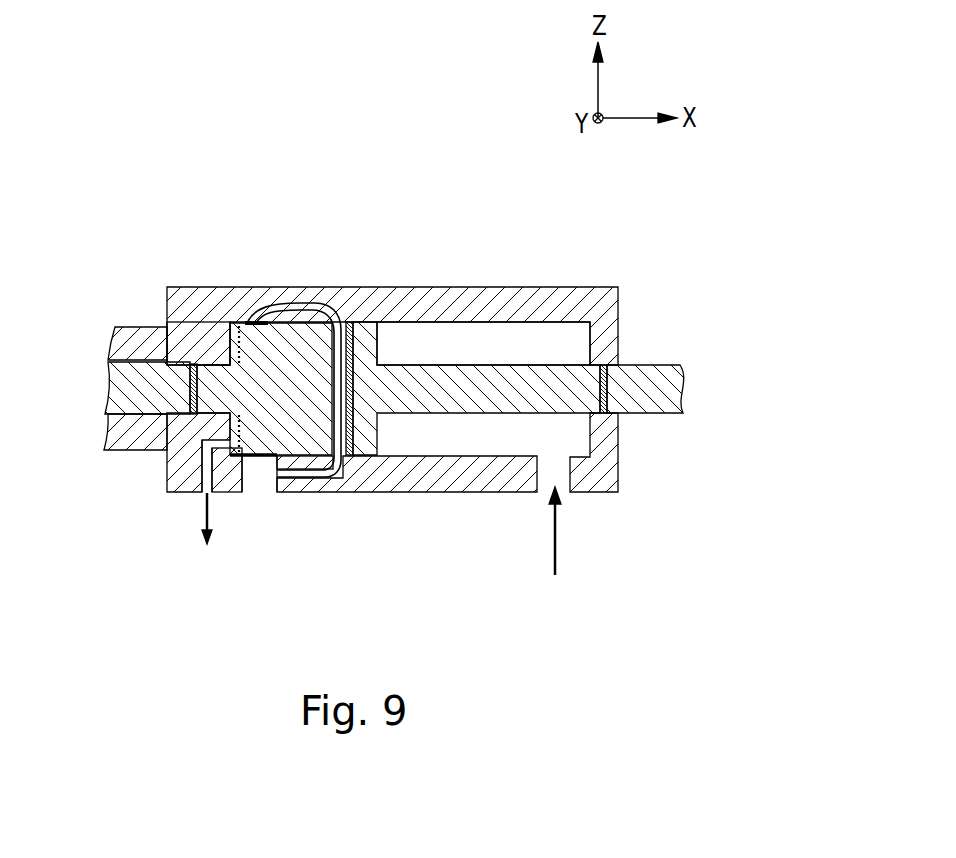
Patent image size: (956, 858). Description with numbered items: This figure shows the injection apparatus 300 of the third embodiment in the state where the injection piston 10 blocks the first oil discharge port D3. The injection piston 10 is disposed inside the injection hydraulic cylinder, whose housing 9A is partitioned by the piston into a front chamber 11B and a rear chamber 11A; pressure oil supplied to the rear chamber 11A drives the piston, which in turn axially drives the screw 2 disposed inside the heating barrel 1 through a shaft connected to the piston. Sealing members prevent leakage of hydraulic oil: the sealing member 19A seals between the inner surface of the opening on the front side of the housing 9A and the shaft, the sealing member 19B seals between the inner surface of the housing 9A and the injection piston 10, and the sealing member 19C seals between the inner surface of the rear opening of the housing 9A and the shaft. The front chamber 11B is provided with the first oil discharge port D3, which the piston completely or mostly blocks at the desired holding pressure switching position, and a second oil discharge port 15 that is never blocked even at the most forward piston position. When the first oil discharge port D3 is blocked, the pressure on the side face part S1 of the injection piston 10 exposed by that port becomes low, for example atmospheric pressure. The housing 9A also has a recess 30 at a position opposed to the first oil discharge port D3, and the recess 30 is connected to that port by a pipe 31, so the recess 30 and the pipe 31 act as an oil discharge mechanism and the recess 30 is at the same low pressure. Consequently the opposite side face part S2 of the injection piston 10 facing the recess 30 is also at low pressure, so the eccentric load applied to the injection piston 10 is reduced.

The injection apparatus 300 is at (362, 108).
The heating barrel 1 is at (116, 327).
The screw 2 is at (110, 378).
The housing 9A is at (513, 290).
The injection piston 10 is at (658, 366).
The rear chamber 11A is at (548, 342).
The front chamber 11B is at (232, 306).
The second oil discharge port 15 is at (197, 505).
The sealing member 19A is at (192, 416).
The sealing member 19B is at (352, 318).
The sealing member 19C is at (606, 404).
The recess 30 is at (280, 320).
The pipe 31 is at (298, 308).
The side face part S1 is at (263, 458).
The side face part S2 is at (256, 320).
The first oil discharge port D3 is at (280, 503).